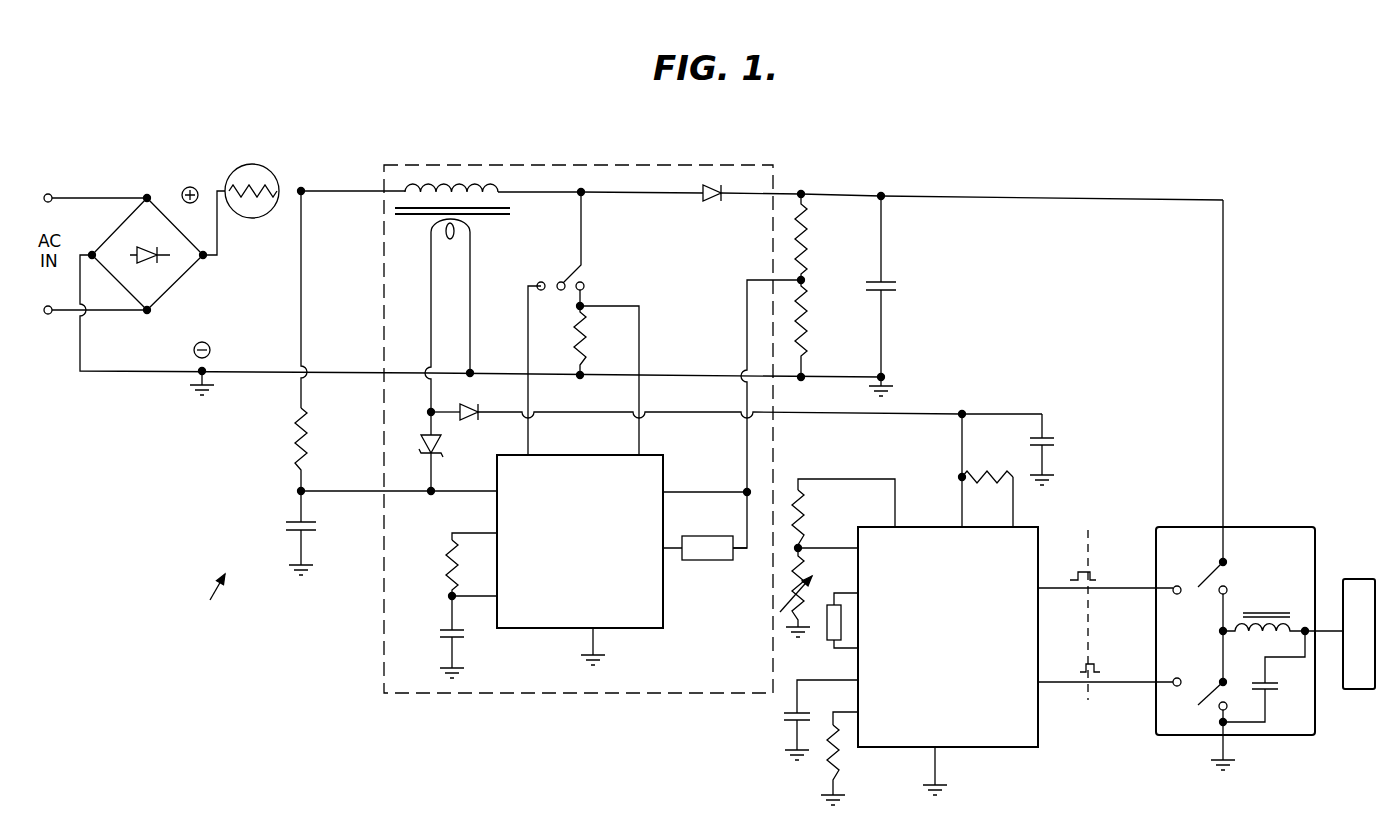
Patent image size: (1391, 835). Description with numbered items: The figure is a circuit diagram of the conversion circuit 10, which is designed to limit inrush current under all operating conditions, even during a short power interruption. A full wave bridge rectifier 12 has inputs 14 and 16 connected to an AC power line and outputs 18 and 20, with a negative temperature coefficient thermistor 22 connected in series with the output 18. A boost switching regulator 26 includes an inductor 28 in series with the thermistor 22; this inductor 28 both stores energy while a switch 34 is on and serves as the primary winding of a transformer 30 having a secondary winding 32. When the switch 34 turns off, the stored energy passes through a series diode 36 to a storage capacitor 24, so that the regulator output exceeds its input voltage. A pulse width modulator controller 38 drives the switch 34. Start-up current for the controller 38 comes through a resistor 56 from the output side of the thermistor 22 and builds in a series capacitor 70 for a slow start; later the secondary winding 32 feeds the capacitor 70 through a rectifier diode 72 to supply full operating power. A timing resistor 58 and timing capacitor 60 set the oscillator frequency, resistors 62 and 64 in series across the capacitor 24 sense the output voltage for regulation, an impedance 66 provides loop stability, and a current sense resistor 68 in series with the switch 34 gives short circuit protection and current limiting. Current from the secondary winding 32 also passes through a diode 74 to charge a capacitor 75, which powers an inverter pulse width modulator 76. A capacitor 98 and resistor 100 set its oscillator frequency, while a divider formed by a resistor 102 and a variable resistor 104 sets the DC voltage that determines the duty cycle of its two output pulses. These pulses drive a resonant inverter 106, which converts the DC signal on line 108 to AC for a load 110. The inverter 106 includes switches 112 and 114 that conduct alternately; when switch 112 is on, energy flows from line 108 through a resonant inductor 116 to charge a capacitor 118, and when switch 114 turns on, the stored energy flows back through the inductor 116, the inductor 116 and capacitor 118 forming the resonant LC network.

The conversion circuit 10 is at (207, 598).
The full wave bridge rectifier 12 is at (160, 238).
The input 14 is at (57, 190).
The input 16 is at (48, 320).
The output 18 is at (217, 230).
The output 20 is at (133, 375).
The negative temperature coefficient thermistor 22 is at (243, 172).
The storage capacitor 24 is at (887, 290).
The boost switching regulator 26 is at (620, 175).
The inductor 28 is at (458, 185).
The transformer 30 is at (503, 215).
The secondary winding 32 is at (450, 240).
The switch 34 is at (584, 268).
The diode 36 is at (718, 183).
The pulse width modulator controller 38 is at (648, 607).
The resistor 56 is at (293, 438).
The timing resistor 58 is at (442, 555).
The timing capacitor 60 is at (452, 640).
The resistor 62 is at (808, 248).
The resistor 64 is at (804, 312).
The impedance 66 is at (706, 550).
The current sense resistor 68 is at (583, 350).
The capacitor 70 is at (283, 526).
The rectifier diode 72 is at (440, 447).
The diode 74 is at (468, 404).
The capacitor 75 is at (1050, 436).
The inverter pulse width modulator 76 is at (1023, 730).
The capacitor 98 is at (790, 712).
The resistor 100 is at (845, 760).
The resistor 102 is at (808, 504).
The variable resistor 104 is at (812, 572).
The resonant inverter 106 is at (1292, 531).
The line 108 is at (1225, 276).
The load 110 is at (1352, 578).
The switch 112 is at (1200, 578).
The switch 114 is at (1201, 710).
The resonant inductor 116 is at (1255, 612).
The capacitor 118 is at (1253, 681).